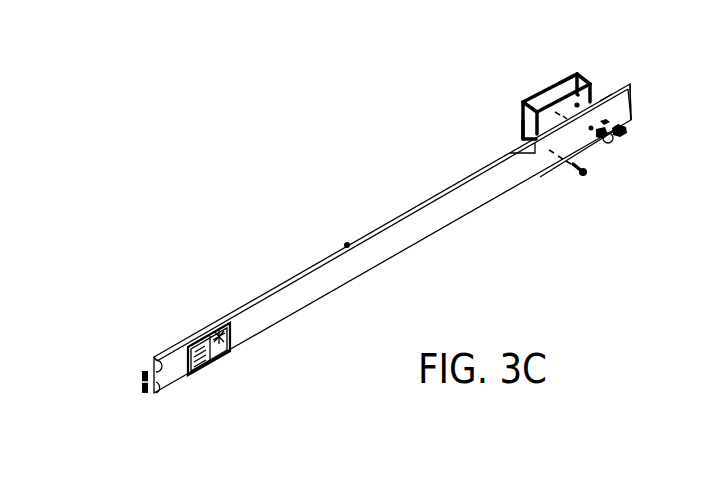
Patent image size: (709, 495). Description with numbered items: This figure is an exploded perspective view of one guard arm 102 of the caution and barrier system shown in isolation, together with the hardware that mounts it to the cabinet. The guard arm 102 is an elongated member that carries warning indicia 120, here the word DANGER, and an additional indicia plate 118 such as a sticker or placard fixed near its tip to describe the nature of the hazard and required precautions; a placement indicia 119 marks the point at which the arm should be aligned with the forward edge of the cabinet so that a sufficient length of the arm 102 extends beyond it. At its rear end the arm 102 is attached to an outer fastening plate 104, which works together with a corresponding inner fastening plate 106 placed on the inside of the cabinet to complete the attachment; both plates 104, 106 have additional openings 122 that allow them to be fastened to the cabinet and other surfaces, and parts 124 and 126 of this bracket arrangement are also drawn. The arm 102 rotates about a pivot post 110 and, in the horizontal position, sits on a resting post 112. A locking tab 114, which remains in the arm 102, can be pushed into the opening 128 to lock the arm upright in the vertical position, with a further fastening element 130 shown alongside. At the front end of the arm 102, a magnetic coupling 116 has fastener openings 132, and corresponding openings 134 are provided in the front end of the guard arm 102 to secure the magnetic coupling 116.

The guard arm 102 is at (391, 270).
The outer fastening plate 104 is at (598, 98).
The inner fastening plate 106 is at (541, 93).
The pivot post 110 is at (623, 137).
The resting post 112 is at (580, 177).
The locking tab 114 is at (610, 143).
The magnetic coupling 116 is at (143, 377).
The indicia plate 118 is at (215, 364).
The placement indicia 119 is at (510, 153).
The warning indicia 120 is at (346, 245).
The openings 122 is at (522, 101).
The bracket leg 124 is at (522, 142).
The bracket top portion 126 is at (576, 72).
The opening 128 is at (591, 131).
The washer 130 is at (605, 121).
The fastener openings 132 is at (141, 378).
The openings 134 is at (158, 357).